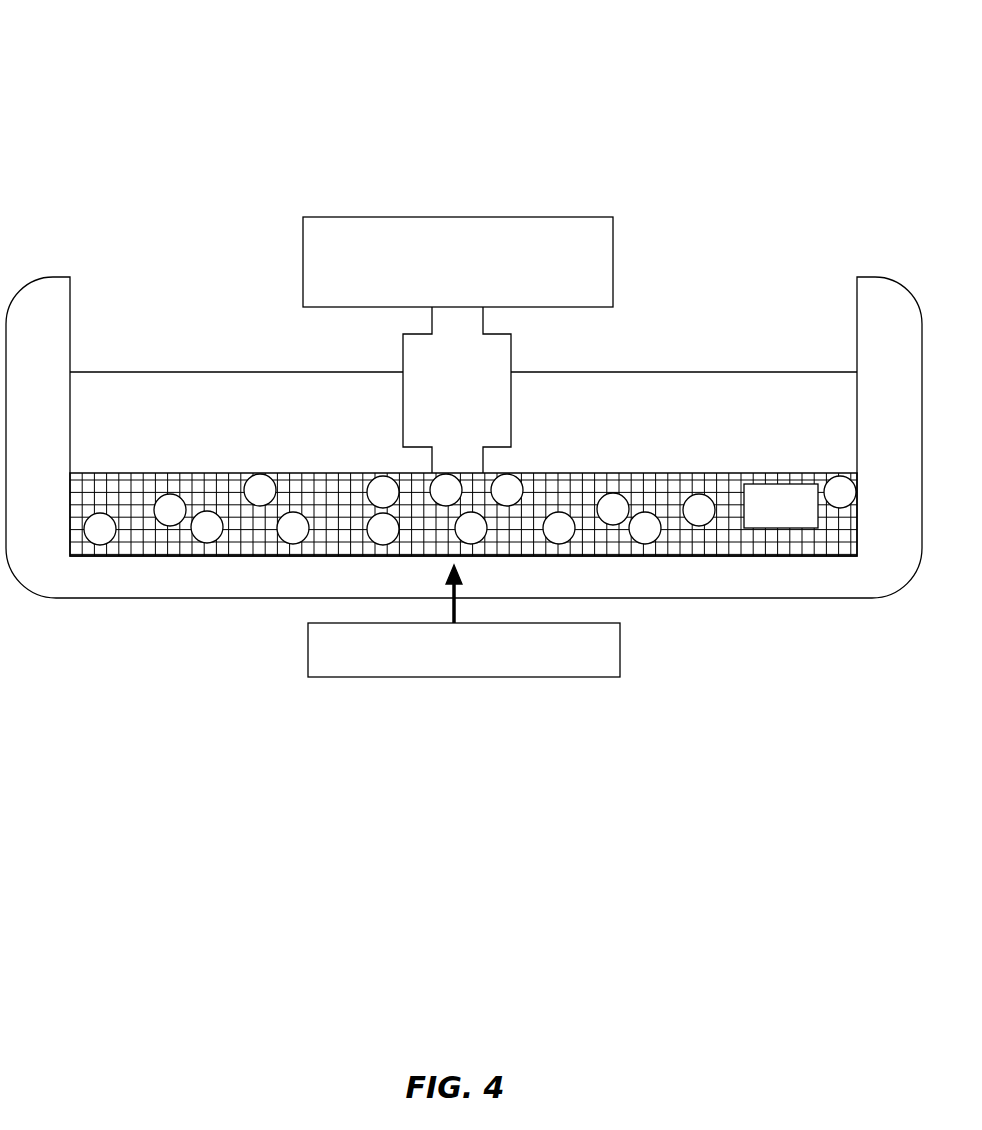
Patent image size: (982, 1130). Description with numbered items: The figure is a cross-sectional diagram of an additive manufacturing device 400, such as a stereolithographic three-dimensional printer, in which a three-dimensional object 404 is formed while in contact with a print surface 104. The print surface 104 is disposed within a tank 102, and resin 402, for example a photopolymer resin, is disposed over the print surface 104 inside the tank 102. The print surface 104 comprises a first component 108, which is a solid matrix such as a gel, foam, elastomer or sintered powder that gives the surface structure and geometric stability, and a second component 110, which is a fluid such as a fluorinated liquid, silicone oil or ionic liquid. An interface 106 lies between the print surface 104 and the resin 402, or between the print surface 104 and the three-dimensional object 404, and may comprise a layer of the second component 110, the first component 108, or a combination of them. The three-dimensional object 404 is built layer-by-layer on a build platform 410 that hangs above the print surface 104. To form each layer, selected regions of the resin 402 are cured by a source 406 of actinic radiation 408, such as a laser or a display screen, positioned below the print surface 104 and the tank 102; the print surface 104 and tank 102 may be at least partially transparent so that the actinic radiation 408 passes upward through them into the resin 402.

The additive manufacturing device 400 is at (106, 150).
The tank 102 is at (464, 437).
The resin 402 is at (463, 391).
The interface 106 is at (143, 475).
The first component 108 is at (572, 492).
The second component 110 is at (260, 490).
The print surface 104 is at (781, 506).
The build platform 410 is at (458, 262).
The three-dimensional object 404 is at (457, 390).
The source of actinic radiation 406 is at (464, 650).
The actinic radiation 408 is at (458, 588).